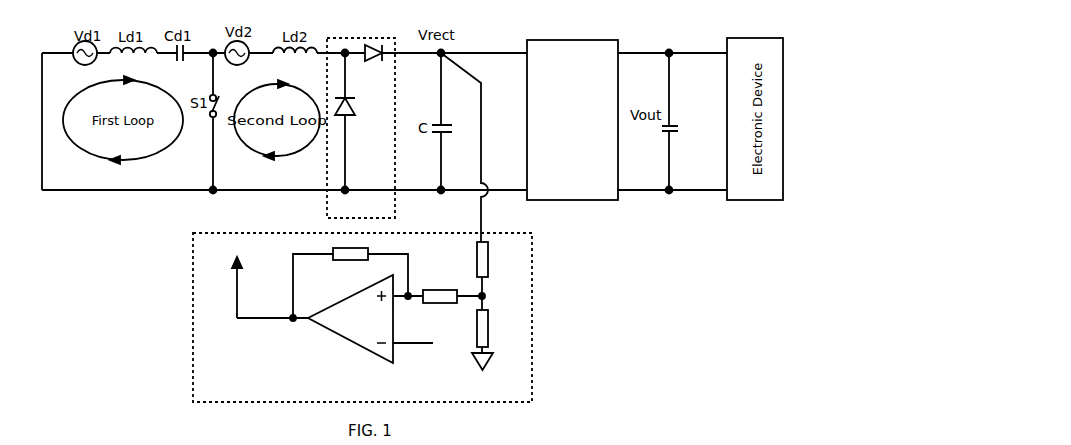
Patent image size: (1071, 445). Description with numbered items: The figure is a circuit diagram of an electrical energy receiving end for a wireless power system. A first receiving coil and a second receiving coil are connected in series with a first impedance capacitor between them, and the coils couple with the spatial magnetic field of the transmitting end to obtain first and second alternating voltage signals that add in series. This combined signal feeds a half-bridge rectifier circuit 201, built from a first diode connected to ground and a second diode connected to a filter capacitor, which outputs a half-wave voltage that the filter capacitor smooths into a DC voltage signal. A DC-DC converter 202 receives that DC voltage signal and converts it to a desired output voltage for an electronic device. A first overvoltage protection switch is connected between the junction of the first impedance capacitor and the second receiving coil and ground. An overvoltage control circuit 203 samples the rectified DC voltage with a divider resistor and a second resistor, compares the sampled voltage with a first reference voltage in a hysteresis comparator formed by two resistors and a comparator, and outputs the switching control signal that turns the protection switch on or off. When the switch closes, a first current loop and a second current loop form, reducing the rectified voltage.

The half-bridge rectifier circuit 201 is at (361, 128).
The DC-DC converter 202 is at (572, 120).
The overvoltage control circuit 203 is at (362, 317).